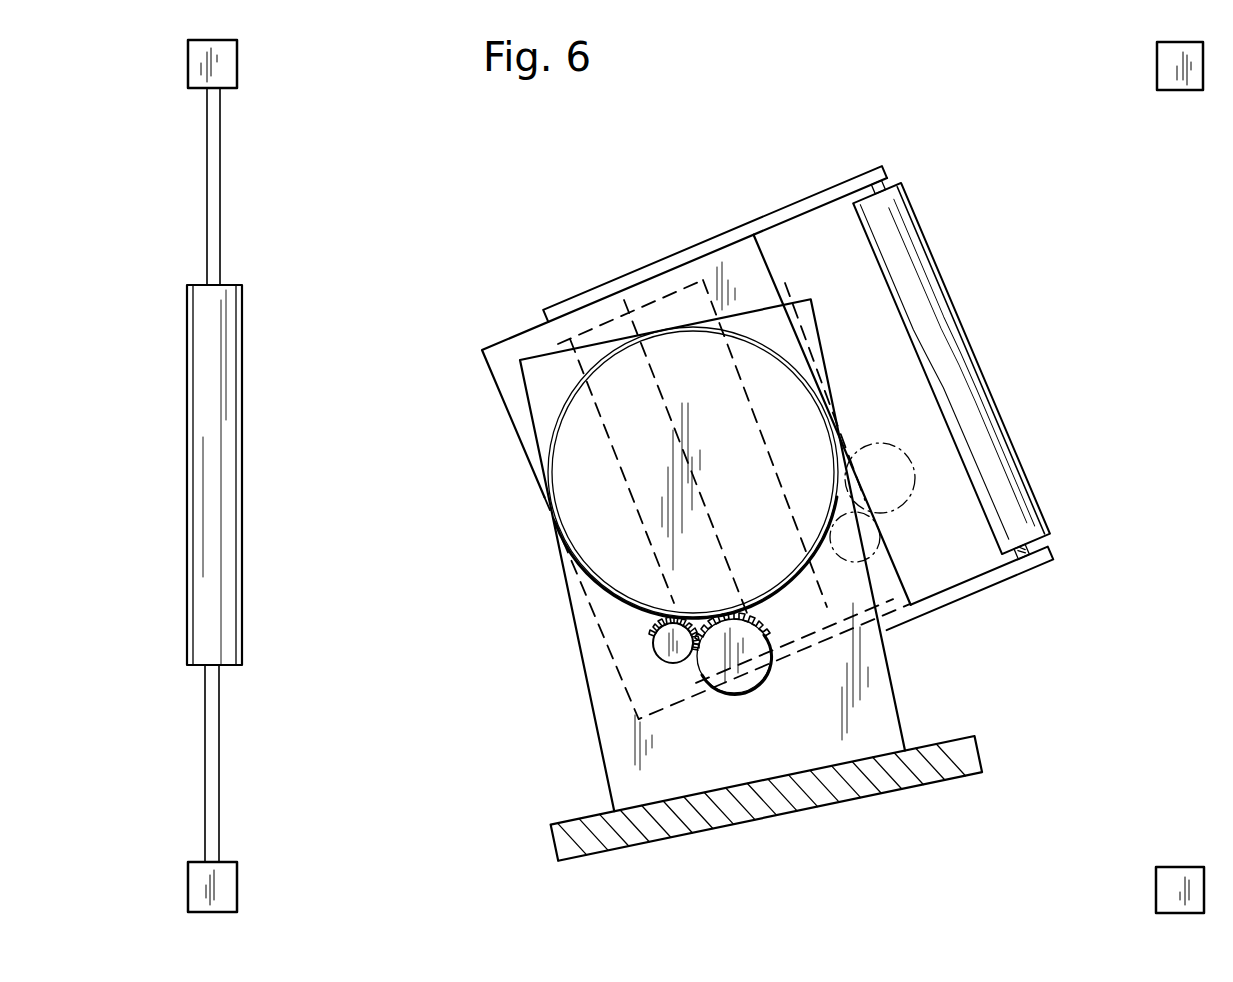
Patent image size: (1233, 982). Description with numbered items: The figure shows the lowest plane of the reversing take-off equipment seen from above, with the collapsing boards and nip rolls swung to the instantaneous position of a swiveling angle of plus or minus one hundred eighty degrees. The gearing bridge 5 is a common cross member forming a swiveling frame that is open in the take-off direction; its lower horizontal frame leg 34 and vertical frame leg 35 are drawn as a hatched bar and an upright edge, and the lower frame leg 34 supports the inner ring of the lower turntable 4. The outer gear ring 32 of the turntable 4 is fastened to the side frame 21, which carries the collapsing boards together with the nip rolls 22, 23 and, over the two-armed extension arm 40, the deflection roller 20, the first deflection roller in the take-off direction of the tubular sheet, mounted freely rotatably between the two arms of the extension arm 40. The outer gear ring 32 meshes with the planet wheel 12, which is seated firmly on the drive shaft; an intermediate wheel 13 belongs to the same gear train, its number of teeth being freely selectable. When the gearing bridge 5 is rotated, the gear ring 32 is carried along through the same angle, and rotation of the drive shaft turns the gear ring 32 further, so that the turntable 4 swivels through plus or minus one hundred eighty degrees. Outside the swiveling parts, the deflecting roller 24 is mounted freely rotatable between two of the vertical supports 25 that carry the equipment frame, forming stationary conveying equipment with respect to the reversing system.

The lower turntable 4 is at (547, 429).
The gearing bridge 5 is at (868, 711).
The planet wheel 12 is at (758, 697).
The intermediate wheel 13 is at (655, 663).
The deflection roller 20 is at (917, 263).
The side frame 21 is at (503, 375).
The nip roll 22 is at (603, 443).
The nip roll 23 is at (698, 290).
The deflecting roller 24 is at (217, 333).
The vertical support 25 is at (222, 67).
The outer gear ring 32 is at (633, 613).
The lower horizontal frame leg 34 is at (820, 747).
The vertical frame leg 35 is at (738, 807).
The extension arm 40 is at (788, 205).